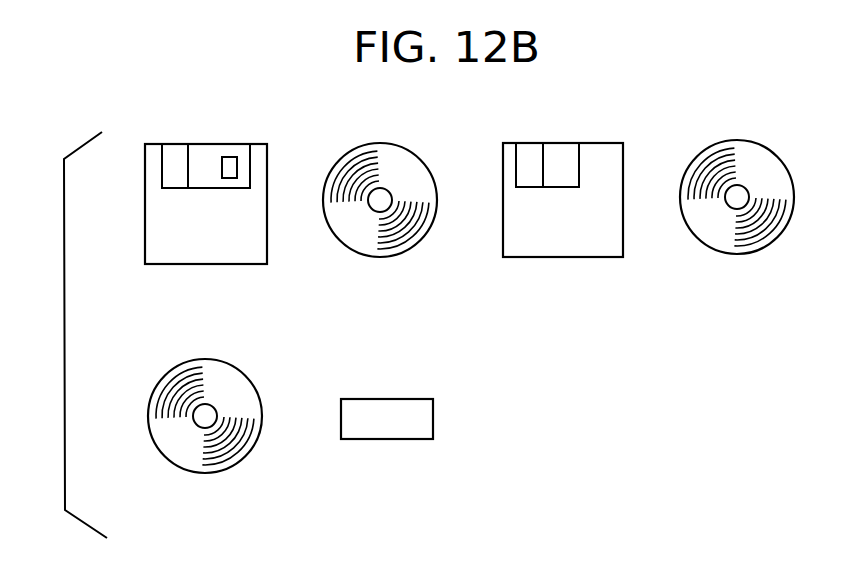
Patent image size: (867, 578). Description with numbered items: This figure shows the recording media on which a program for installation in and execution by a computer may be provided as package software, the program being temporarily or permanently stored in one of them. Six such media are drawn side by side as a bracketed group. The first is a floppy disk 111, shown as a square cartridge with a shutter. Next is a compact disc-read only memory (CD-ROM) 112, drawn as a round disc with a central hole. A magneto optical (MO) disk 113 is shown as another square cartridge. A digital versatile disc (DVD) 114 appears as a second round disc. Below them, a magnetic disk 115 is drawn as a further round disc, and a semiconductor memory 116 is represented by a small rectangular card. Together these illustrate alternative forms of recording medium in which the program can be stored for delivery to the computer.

The floppy disk 111 is at (207, 264).
The compact disc-read only memory (CD-ROM) 112 is at (380, 257).
The magneto optical (MO) disk 113 is at (560, 257).
The digital versatile disc (DVD) 114 is at (740, 254).
The magnetic disk 115 is at (207, 473).
The semiconductor memory 116 is at (392, 439).